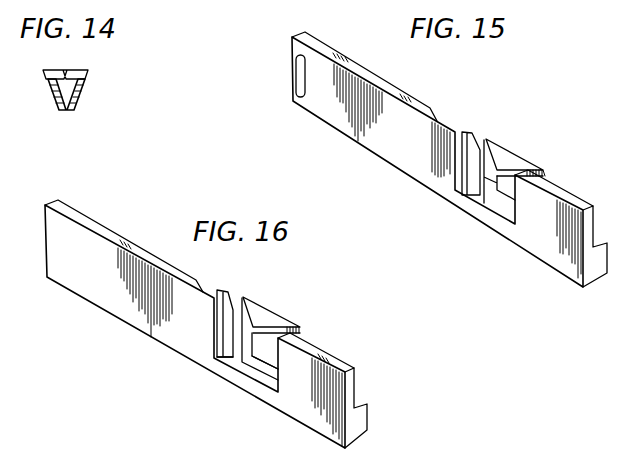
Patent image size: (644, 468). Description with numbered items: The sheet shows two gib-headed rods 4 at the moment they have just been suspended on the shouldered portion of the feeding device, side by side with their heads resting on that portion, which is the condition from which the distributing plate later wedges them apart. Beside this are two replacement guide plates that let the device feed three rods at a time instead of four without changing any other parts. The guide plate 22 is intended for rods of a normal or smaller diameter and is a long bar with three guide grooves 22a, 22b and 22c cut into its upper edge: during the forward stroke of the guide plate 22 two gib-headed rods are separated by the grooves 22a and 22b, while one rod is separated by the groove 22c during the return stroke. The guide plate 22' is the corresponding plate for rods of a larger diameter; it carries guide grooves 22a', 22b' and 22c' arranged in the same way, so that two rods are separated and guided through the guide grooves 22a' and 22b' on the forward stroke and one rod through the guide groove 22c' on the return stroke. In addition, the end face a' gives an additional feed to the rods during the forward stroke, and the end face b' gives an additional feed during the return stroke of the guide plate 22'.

In FIG. 14, the gib-headed rod 4 is at (82, 66).
In FIG. 15, the guide plate 22 is at (449, 159).
In FIG. 15, the guide groove 22a is at (479, 143).
In FIG. 15, the guide groove 22b is at (520, 145).
In FIG. 15, the guide groove 22c is at (562, 162).
In FIG. 16, the guide plate 22' is at (206, 319).
In FIG. 16, the guide groove 22a' is at (245, 309).
In FIG. 16, the guide groove 22b' is at (287, 309).
In FIG. 16, the guide groove 22c' is at (329, 330).
In FIG. 16, the end face a' is at (218, 378).
In FIG. 16, the end face b' is at (261, 389).